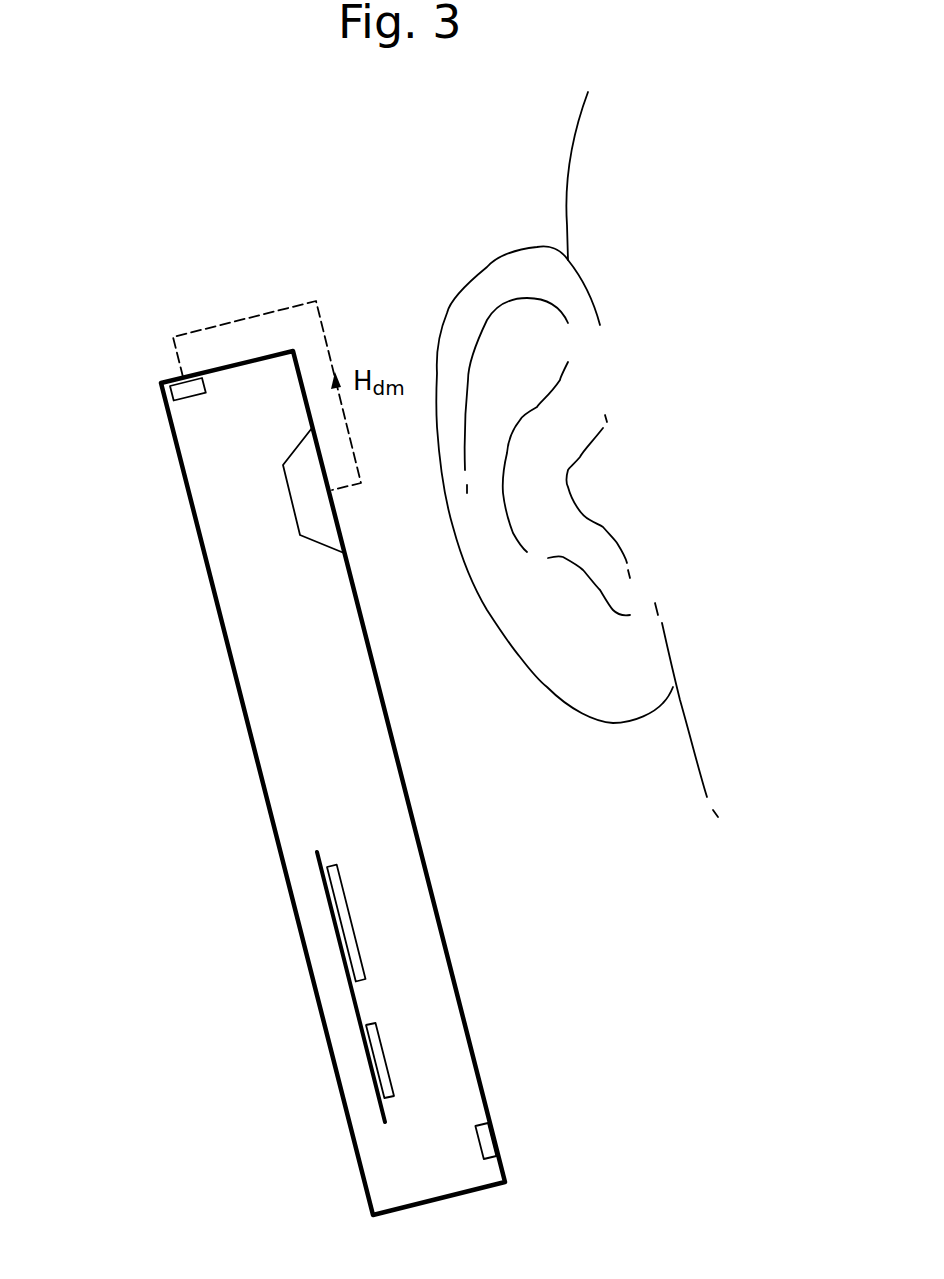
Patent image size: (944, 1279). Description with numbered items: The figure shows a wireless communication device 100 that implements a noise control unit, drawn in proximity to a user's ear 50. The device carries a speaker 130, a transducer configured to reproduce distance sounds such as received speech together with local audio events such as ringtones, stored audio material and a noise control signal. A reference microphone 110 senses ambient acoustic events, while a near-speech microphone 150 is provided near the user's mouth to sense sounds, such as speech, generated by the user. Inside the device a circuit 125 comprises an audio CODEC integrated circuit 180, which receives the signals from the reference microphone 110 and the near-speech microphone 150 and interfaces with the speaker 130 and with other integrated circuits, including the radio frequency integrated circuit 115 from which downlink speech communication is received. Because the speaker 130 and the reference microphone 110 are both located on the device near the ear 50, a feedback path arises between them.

The user's ear 50 is at (484, 240).
The wireless communication device 100 is at (192, 609).
The reference microphone 110 is at (185, 393).
The radio frequency integrated circuit 115 is at (382, 1058).
The circuit 125 is at (355, 1008).
The speaker 130 is at (325, 526).
The near-speech microphone 150 is at (487, 1137).
The audio CODEC integrated circuit 180 is at (338, 900).